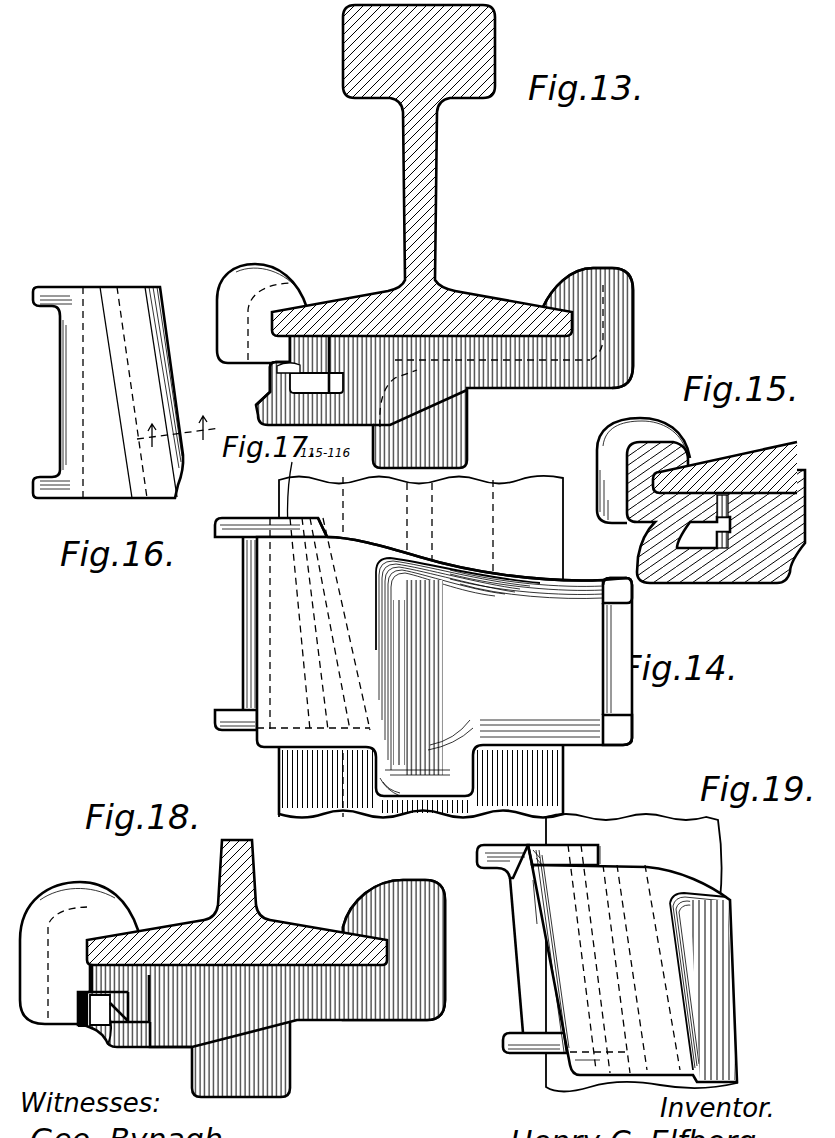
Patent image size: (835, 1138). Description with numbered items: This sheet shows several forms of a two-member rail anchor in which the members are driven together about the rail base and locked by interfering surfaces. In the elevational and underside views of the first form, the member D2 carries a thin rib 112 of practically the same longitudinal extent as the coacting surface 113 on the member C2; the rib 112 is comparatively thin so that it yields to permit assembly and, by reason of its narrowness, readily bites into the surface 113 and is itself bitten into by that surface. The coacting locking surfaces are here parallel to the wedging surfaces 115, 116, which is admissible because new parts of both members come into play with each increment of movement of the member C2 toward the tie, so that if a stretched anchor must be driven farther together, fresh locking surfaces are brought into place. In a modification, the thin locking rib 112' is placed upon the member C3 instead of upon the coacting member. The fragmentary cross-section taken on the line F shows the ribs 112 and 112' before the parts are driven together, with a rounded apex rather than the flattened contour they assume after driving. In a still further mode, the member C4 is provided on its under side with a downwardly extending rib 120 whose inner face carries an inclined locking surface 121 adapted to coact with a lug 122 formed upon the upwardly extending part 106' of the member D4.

In FIG. 13, the rib 112 is at (358, 365).
In FIG. 15, the rib 112 is at (762, 555).
In FIG. 14, the rib 112 is at (458, 624).
In FIG. 13, the coacting surface 113 is at (305, 348).
In FIG. 15, the coacting surface 113 is at (745, 560).
In FIG. 14, the coacting surface 113 is at (327, 537).
In FIG. 13, the wedging surface 115 is at (298, 368).
In FIG. 13, the wedging surface 116 is at (316, 397).
In FIG. 16, the thin locking rib 112' is at (159, 360).
In FIG. 13, the member C2 is at (231, 277).
In FIG. 14, the member C2 is at (250, 612).
In FIG. 16, the member C3 is at (60, 293).
In FIG. 18, the member C4 is at (90, 920).
In FIG. 19, the member C4 is at (538, 949).
In FIG. 13, the member D2 is at (632, 290).
In FIG. 15, the member D2 is at (643, 470).
In FIG. 14, the member D2 is at (556, 661).
In FIG. 18, the member D4 is at (405, 902).
In FIG. 19, the member D4 is at (702, 986).
In FIG. 16, the section line F is at (178, 425).
In FIG. 18, the downwardly extending rib 120 is at (55, 1026).
In FIG. 18, the inclined locking surface 121 is at (83, 1026).
In FIG. 19, the inclined locking surface 121 is at (540, 925).
In FIG. 18, the lug 122 is at (88, 1003).
In FIG. 19, the lug 122 is at (540, 884).
In FIG. 18, the upwardly extending part 106' is at (129, 1028).
In FIG. 19, the upwardly extending part 106' is at (538, 1077).